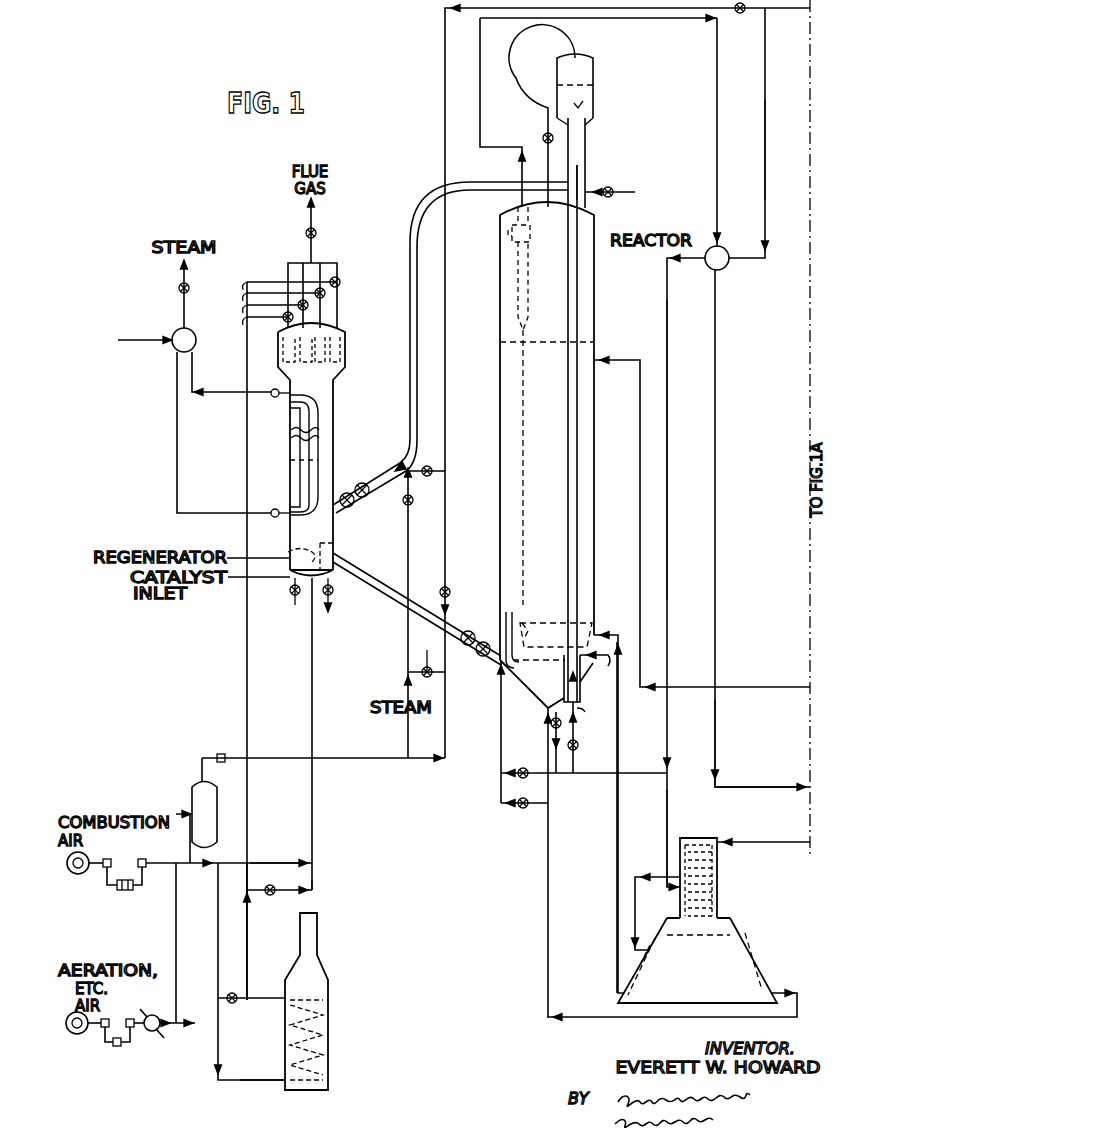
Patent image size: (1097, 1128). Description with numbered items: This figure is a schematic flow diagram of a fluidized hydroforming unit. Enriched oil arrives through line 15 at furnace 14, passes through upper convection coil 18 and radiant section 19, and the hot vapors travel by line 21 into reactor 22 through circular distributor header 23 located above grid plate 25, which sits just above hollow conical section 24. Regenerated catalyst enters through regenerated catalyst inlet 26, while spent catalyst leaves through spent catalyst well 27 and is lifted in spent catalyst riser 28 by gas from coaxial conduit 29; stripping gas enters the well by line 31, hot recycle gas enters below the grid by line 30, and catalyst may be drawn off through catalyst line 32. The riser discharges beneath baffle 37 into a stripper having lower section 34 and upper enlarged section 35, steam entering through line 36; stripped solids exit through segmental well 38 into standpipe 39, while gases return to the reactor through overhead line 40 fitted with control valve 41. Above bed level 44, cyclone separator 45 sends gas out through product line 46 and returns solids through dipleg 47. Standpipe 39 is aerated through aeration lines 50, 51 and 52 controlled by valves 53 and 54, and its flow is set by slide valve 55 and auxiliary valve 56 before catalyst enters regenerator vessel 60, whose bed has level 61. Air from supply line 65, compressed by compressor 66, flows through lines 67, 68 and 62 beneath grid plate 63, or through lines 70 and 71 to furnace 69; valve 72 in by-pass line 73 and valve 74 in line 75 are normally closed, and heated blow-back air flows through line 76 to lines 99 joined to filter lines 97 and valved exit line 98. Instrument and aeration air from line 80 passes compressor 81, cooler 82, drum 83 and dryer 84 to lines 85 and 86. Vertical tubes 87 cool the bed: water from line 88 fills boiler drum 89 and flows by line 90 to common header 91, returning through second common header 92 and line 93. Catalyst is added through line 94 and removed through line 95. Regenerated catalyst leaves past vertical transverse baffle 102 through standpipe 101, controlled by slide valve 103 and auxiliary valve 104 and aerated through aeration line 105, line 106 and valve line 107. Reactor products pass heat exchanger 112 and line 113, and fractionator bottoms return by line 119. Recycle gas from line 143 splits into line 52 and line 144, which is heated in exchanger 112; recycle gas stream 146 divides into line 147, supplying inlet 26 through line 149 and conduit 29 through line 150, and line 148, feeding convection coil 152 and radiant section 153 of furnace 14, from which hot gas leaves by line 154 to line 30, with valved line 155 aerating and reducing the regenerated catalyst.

The furnace 14 is at (729, 927).
The line 15 is at (776, 849).
The upper convection coil 18 is at (692, 840).
The radiant section 19 is at (658, 967).
The line 21 is at (617, 910).
The reactor 22 is at (594, 283).
The circular distributor header 23 is at (547, 622).
The hollow conical section 24 is at (528, 682).
The grid plate 25 is at (539, 660).
The regenerated catalyst inlet 26 is at (510, 618).
The spent catalyst well 27 is at (580, 690).
The spent catalyst riser 28 is at (578, 425).
The vertical hollow conduit 29 is at (590, 717).
The line 30 is at (547, 738).
The line 31 is at (601, 813).
The catalyst line 32 is at (560, 742).
The lower section 34 is at (587, 138).
The upper enlarged section 35 is at (593, 66).
The line 36 is at (625, 192).
The baffle 37 is at (587, 103).
The segmental well 38 is at (580, 178).
The spent catalyst standpipe 39 is at (430, 198).
The overhead line 40 is at (516, 31).
The control valve 41 is at (543, 137).
The bed level 44 is at (502, 341).
The cyclone separator 45 is at (516, 305).
The product line 46 is at (716, 128).
The dipleg 47 is at (518, 412).
The aeration line 50 is at (412, 468).
The aeration line 51 is at (409, 541).
The aeration line 52 is at (742, 16).
The valve 53 is at (405, 503).
The valve 54 is at (427, 477).
The slide valve 55 is at (349, 506).
The auxiliary valve 56 is at (362, 483).
The regenerator vessel 60 is at (333, 412).
The level 61 is at (330, 456).
The line 62 is at (313, 793).
The grid plate 63 is at (286, 551).
The supply line 65 is at (88, 868).
The compressor 66 is at (123, 891).
The line 67 is at (163, 870).
The line 68 is at (286, 863).
The furnace 69 is at (330, 1032).
The line 70 is at (217, 948).
The line 71 is at (246, 1088).
The valve 72 is at (233, 991).
The by-pass line 73 is at (236, 1005).
The valve 74 is at (269, 895).
The line 75 is at (312, 894).
The line 76 is at (244, 637).
The line 80 is at (88, 1029).
The compressor 81 is at (115, 1050).
The cooler 82 is at (149, 1035).
The drum 83 is at (192, 793).
The dryer 84 is at (220, 753).
The line 85 is at (438, 760).
The line 86 is at (439, 719).
The vertical tubes 87 is at (291, 434).
The line 88 is at (141, 347).
The boiler drum 89 is at (174, 330).
The line 90 is at (177, 435).
The common header 91 is at (274, 517).
The second common header 92 is at (275, 397).
The line 93 is at (212, 393).
The line 94 is at (290, 600).
The line 95 is at (333, 584).
The lines 97 is at (311, 314).
The valved exit line 98 is at (306, 217).
The lines 99 is at (247, 306).
The standpipe 101 is at (382, 588).
The vertical transverse baffle 102 is at (332, 541).
The slide valve 103 is at (476, 630).
The auxiliary valve 104 is at (478, 656).
The aeration line 105 is at (448, 541).
The line 106 is at (430, 648).
The valve line 107 is at (432, 675).
The heat exchanger 112 is at (727, 270).
The line 113 is at (758, 792).
The line 119 is at (686, 687).
The line 143 is at (787, 8).
The line 144 is at (766, 165).
The recycle gas stream 146 is at (668, 543).
The line 147 is at (643, 774).
The line 148 is at (666, 820).
The line 149 is at (532, 774).
The line 150 is at (577, 758).
The convection coil 152 is at (716, 895).
The radiant section 153 is at (744, 950).
The line 154 is at (594, 1017).
The valved line 155 is at (532, 804).